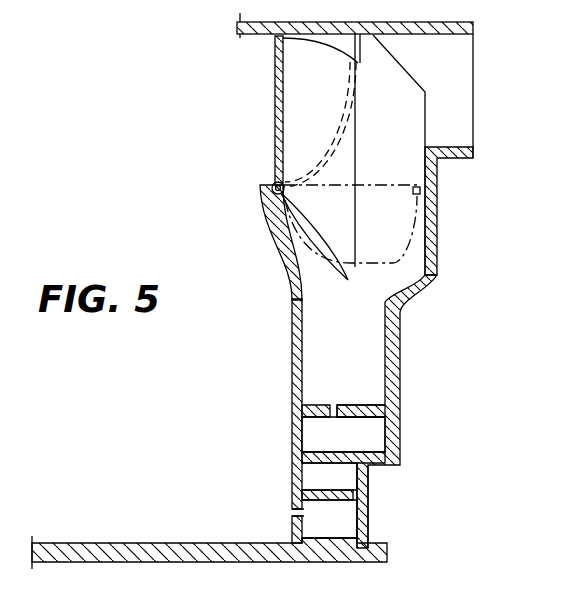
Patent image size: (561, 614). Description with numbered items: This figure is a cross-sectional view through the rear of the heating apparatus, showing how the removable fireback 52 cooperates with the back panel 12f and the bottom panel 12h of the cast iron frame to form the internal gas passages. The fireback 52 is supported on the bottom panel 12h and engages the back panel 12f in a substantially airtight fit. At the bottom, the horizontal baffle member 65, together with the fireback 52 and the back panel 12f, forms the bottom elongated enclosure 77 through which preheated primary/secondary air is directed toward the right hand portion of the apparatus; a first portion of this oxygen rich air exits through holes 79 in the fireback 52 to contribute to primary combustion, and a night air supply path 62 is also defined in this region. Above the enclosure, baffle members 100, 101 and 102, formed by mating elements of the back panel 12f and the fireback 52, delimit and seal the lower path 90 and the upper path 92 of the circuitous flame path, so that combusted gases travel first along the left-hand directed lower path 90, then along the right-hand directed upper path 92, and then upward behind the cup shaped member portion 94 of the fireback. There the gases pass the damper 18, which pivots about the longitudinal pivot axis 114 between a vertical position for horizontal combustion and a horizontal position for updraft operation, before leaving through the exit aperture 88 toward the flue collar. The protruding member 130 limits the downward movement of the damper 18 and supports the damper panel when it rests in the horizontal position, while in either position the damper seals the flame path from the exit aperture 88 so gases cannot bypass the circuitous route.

The damper 18 is at (274, 126).
The exit aperture 88 is at (412, 127).
The longitudinal pivot axis 114 is at (304, 209).
The protruding member 130 is at (415, 197).
The cup shaped member portion 94 is at (279, 274).
The fireback 52 is at (292, 347).
The upper path 92 is at (352, 349).
The baffle member 101 is at (363, 404).
The baffle member 100 is at (316, 404).
The lower path 90 is at (338, 440).
The baffle member 102 is at (337, 450).
The night air supply path 62 is at (340, 485).
The back panel 12f is at (369, 478).
The holes 79 is at (291, 516).
The horizontal baffle member 65 is at (311, 495).
The bottom elongated enclosure 77 is at (343, 529).
The bottom panel 12h is at (247, 562).